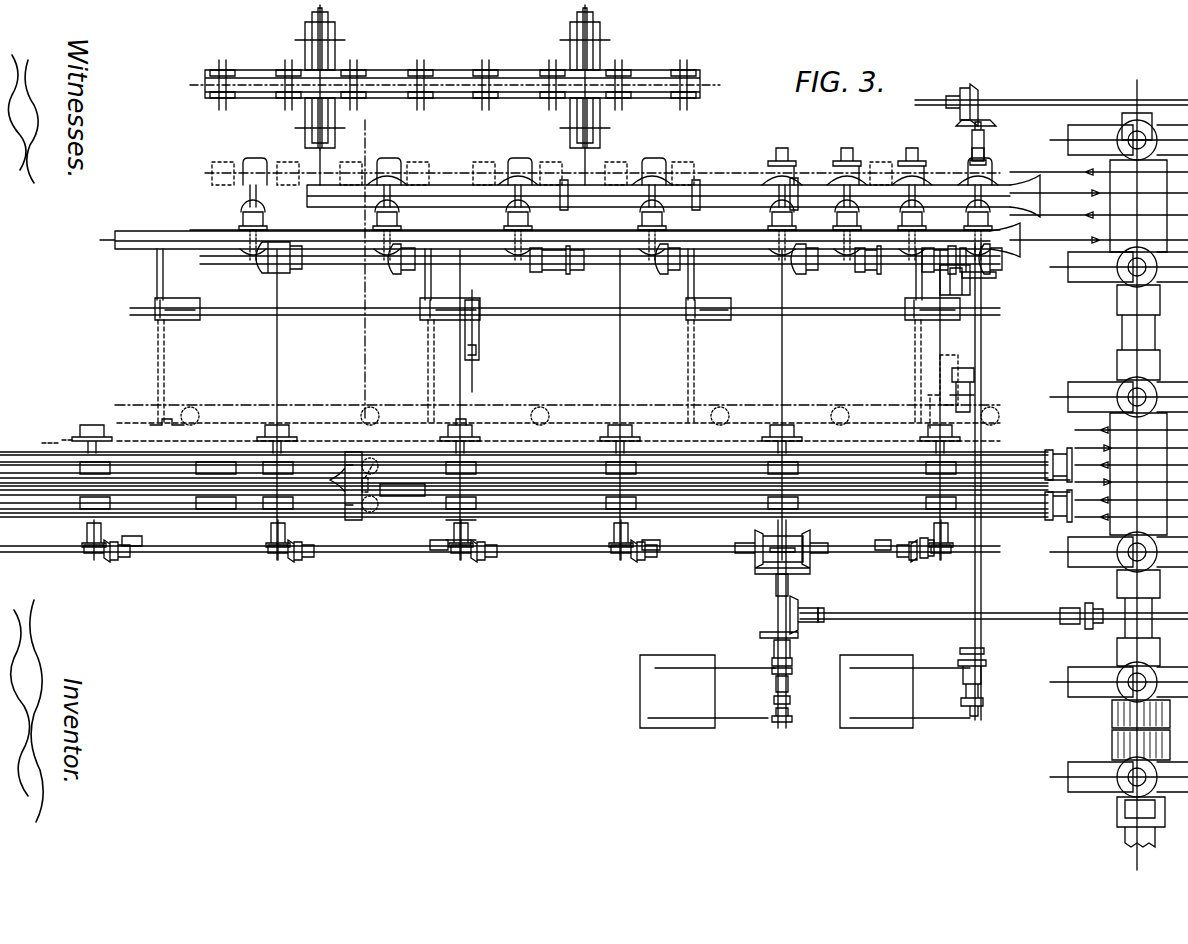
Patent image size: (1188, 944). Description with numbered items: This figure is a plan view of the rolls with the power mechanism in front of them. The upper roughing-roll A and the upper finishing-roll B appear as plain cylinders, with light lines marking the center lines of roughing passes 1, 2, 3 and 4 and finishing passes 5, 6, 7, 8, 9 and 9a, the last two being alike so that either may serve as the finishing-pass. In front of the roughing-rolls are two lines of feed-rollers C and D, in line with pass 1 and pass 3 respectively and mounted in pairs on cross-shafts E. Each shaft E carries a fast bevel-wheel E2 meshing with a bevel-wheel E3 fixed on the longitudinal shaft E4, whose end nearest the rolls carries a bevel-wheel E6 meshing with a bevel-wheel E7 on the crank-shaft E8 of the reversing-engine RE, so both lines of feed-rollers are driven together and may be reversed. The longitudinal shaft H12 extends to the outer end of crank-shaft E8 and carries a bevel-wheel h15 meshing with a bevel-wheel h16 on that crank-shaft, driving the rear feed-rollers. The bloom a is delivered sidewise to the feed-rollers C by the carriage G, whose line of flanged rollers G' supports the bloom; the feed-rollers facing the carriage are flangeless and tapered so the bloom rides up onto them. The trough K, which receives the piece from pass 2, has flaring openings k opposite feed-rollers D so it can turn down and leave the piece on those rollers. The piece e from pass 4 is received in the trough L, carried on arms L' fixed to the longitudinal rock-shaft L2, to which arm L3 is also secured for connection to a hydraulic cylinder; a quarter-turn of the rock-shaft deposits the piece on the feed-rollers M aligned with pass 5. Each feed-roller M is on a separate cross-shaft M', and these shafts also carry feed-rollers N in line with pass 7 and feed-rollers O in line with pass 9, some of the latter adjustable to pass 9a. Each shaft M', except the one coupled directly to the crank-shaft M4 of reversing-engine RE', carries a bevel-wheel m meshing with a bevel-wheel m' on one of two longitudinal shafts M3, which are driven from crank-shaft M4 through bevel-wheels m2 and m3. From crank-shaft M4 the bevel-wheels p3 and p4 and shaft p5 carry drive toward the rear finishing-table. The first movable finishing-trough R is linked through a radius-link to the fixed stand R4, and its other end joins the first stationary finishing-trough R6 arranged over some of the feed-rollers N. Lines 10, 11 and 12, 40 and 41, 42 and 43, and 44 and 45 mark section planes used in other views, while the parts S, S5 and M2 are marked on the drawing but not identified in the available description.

The bloom a is at (455, 84).
The carriage G is at (420, 77).
The flanged rollers G' is at (495, 73).
The section line 10 is at (452, 212).
The trough K is at (673, 196).
The openings k is at (598, 194).
The feed-rollers C is at (617, 172).
The feed-rollers D is at (600, 215).
The trough L is at (560, 330).
The cross-shafts E is at (225, 212).
The bevel-wheel E2 is at (705, 267).
The bevel-wheel E3 is at (282, 280).
The longitudinal shaft E4 is at (610, 270).
The bevel-wheel E6 is at (946, 272).
The bevel-wheel E7 is at (992, 276).
The crank-shaft E8 is at (986, 138).
The bevel-wheel h15 is at (970, 90).
The bevel-wheel h16 is at (992, 124).
The longitudinal shaft H12 is at (1051, 94).
The arms L' is at (557, 337).
The rock-shaft L2 is at (565, 302).
The arm L3 is at (480, 342).
The section line 11 is at (557, 419).
The section line 12 is at (931, 407).
The section line 42 is at (590, 423).
The section line 44 is at (308, 412).
The feed-rollers M is at (516, 405).
The pulley M2 is at (80, 546).
The feed-rollers N is at (536, 465).
The first movable finishing-trough R is at (524, 475).
The feed-rollers O is at (536, 506).
The bar S is at (895, 495).
The first stationary finishing-trough R6 is at (216, 465).
The bracket S5 is at (216, 501).
The section line 40 is at (334, 486).
The section line 41 is at (445, 486).
The section line 43 is at (370, 520).
The section line 45 is at (470, 526).
The cross-shafts M' is at (517, 519).
The longitudinal shafts M3 is at (500, 543).
The crank-shaft M4 is at (770, 614).
The bevel-wheel m is at (509, 561).
The bevel-wheel m' is at (518, 560).
The bevel-wheel m2 is at (792, 580).
The bevel-wheels m3 is at (754, 540).
The bevel-wheel p3 is at (794, 640).
The bevel-wheel p4 is at (822, 605).
The shaft p5 is at (1020, 624).
The reversing-engine RE' is at (707, 691).
The reversing-engine RE is at (913, 688).
The fixed stand R4 is at (957, 382).
The upper roughing-roll A is at (1119, 475).
The upper finishing-roll B is at (1138, 474).
The piece e is at (1119, 458).
The pass 1 is at (1099, 167).
The pass 2 is at (1099, 188).
The pass 3 is at (1099, 210).
The pass 4 is at (1099, 235).
The pass 5 is at (1131, 425).
The pass 6 is at (1131, 443).
The pass 7 is at (1131, 460).
The pass 8 is at (1131, 477).
The pass 9 is at (1131, 495).
The pass 9a is at (1131, 512).